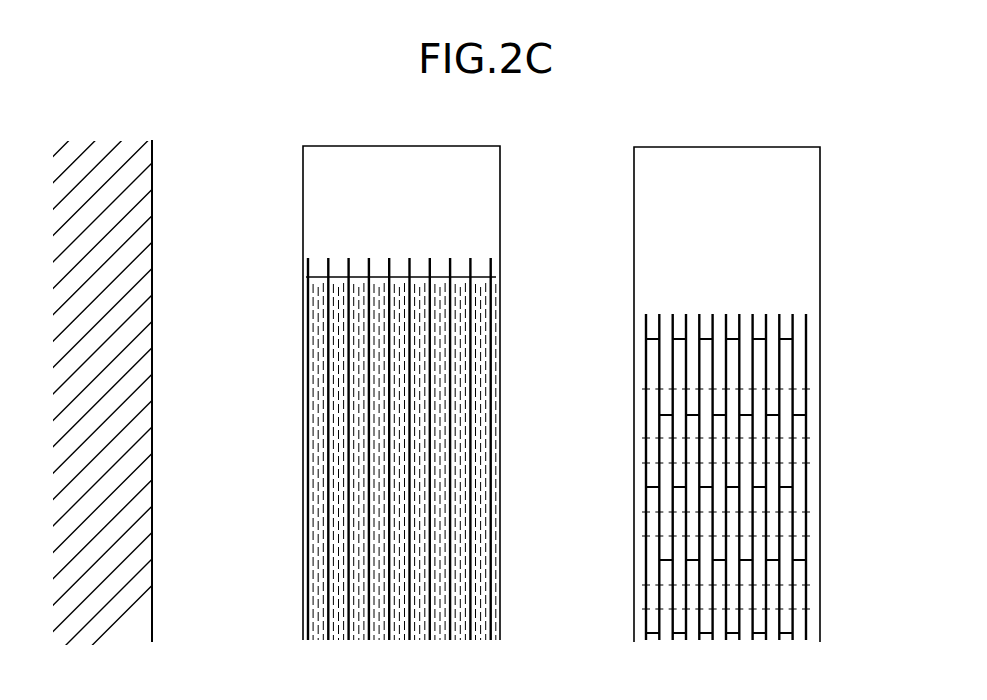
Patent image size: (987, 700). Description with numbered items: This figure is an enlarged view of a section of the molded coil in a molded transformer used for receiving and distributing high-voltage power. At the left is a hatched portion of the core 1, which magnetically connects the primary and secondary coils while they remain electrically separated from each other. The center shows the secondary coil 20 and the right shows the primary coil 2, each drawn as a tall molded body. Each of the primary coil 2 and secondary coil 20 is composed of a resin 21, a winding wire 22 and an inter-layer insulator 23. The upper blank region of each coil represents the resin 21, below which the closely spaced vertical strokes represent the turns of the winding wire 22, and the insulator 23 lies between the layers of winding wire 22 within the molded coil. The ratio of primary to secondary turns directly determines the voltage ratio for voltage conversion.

The core 1 is at (153, 282).
The primary coil 2 is at (821, 163).
The secondary coil 20 is at (500, 163).
The resin 21 is at (437, 215).
The winding wire 22 is at (483, 322).
The inter-layer insulator 23 is at (471, 258).